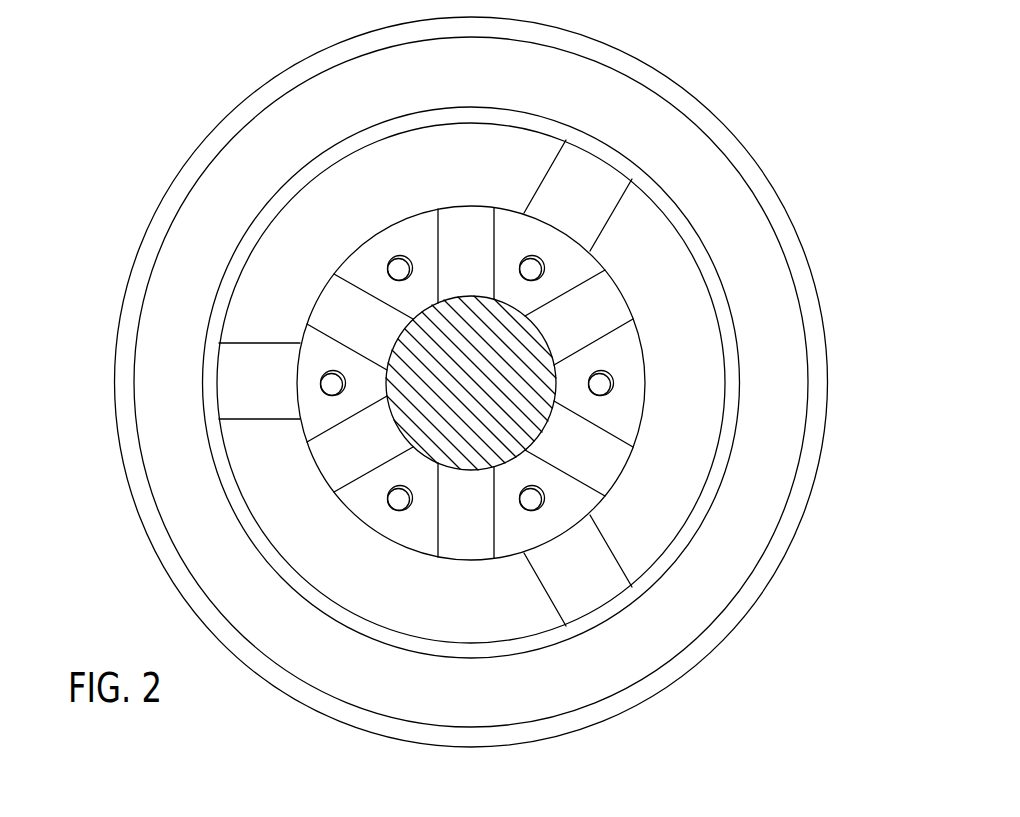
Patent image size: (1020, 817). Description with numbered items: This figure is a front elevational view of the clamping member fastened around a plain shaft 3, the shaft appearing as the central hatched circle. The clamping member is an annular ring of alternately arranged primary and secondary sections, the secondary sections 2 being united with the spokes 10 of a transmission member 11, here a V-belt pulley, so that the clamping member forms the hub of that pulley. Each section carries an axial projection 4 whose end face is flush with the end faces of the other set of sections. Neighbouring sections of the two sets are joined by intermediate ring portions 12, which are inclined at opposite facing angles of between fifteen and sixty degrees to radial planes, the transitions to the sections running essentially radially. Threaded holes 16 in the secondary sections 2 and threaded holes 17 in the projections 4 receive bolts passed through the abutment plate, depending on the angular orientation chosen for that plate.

The secondary sections 2 is at (510, 220).
The plain shaft 3 is at (470, 323).
The axial projection 4 is at (353, 263).
The spokes 10 is at (553, 180).
The transmission member 11 is at (757, 222).
The intermediate ring portions 12 is at (467, 218).
The threaded holes 16 is at (542, 266).
The threaded holes 17 is at (402, 254).